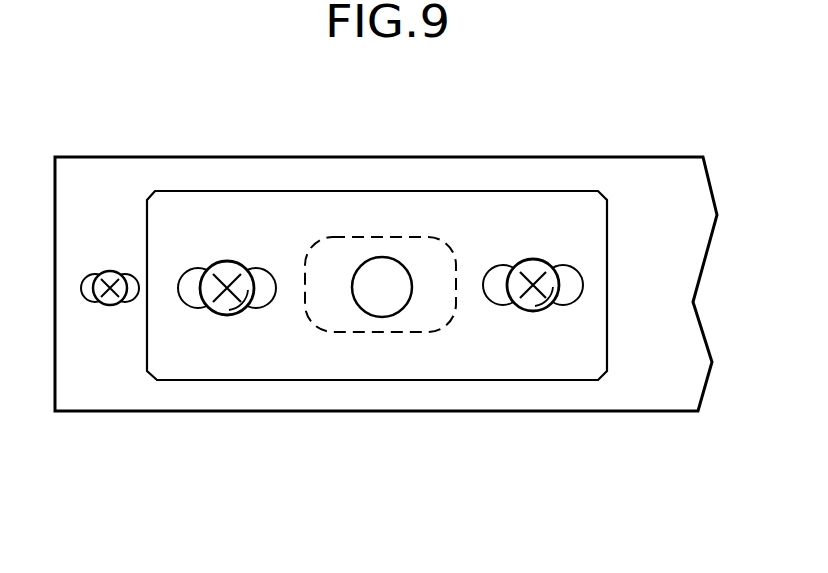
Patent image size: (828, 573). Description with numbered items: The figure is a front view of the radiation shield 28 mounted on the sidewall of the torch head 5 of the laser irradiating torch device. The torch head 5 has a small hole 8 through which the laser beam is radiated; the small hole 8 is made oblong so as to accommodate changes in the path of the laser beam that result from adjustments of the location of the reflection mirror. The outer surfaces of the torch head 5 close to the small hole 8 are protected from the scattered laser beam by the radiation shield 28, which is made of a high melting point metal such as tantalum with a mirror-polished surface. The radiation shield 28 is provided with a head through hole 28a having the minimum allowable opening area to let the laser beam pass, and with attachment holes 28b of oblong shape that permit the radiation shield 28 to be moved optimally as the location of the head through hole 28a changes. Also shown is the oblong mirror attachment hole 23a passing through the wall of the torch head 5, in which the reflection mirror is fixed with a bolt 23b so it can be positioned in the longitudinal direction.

The torch head 5 is at (606, 427).
The small hole 8 is at (402, 320).
The radiation shield 28 is at (545, 191).
The head through hole 28a is at (403, 269).
The attachment holes 28b is at (568, 293).
The mirror attachment hole 23a is at (128, 292).
The bolt 23b is at (112, 306).